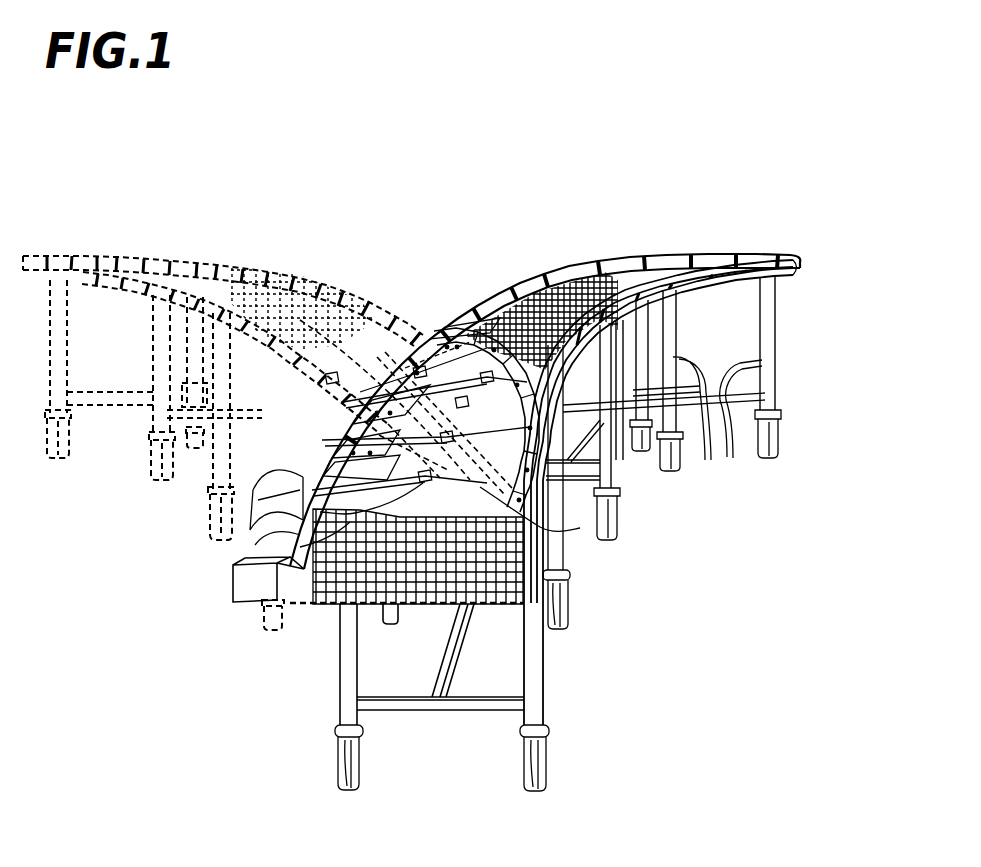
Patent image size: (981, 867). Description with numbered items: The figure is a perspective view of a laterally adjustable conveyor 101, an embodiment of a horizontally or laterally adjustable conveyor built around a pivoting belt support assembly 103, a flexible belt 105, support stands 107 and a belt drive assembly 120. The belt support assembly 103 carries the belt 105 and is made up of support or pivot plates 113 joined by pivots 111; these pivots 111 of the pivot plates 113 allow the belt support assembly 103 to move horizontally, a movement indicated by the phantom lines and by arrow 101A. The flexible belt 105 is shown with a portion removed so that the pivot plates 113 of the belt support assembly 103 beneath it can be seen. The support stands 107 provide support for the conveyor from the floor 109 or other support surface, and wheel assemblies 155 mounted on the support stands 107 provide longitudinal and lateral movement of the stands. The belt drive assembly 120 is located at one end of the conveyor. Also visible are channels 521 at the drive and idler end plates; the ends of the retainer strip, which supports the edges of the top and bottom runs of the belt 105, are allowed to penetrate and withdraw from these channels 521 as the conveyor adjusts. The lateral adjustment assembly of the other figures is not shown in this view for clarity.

The laterally adjustable conveyor 101 is at (574, 175).
The arrow 101A is at (467, 233).
The belt support assembly 103 is at (290, 445).
The flexible belt 105 is at (300, 655).
The support stands 107 is at (717, 426).
The floor 109 is at (600, 710).
The pivots 111 is at (300, 494).
The pivot plates 113 is at (565, 575).
The belt drive assembly 120 is at (198, 587).
The wheel assemblies 155 is at (548, 773).
The channels 521 is at (300, 547).